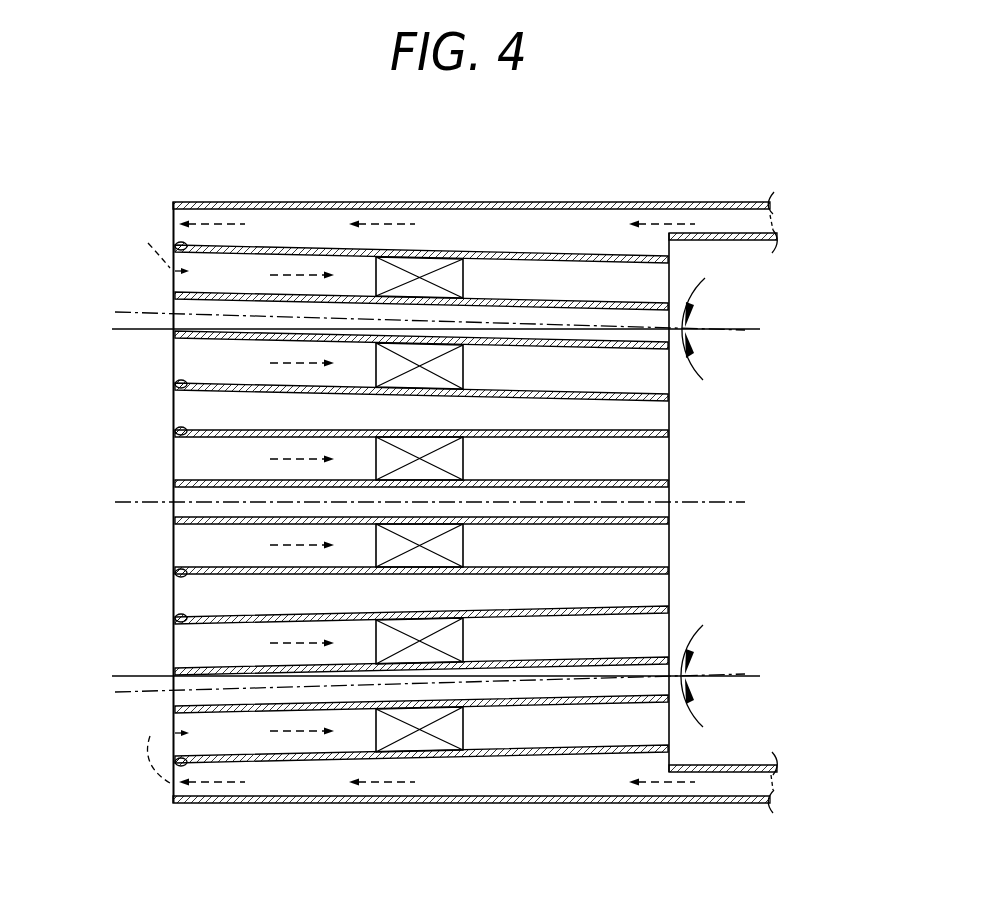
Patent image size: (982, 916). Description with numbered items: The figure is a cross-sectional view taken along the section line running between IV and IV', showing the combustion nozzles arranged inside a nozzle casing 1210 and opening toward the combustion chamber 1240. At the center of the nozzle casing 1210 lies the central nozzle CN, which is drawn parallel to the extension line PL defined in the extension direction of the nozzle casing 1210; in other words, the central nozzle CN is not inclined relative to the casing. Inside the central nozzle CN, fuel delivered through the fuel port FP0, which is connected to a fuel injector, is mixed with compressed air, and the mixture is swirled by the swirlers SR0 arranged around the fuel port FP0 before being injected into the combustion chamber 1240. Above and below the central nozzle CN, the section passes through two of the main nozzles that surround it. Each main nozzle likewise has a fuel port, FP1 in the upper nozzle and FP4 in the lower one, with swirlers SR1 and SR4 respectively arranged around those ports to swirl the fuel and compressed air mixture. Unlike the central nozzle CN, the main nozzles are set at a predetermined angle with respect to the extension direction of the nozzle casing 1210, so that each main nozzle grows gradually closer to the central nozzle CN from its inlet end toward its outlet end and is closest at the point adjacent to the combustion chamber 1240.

The nozzle casing 1210 is at (537, 202).
The combustion chamber 1240 is at (710, 470).
The fuel port FP1 is at (247, 294).
The fuel port FP0 is at (231, 525).
The fuel port FP4 is at (250, 712).
The swirlers SR1 is at (433, 259).
The swirlers SR0 is at (452, 545).
The swirlers SR4 is at (433, 750).
The central nozzle CN is at (173, 466).
The extension line PL is at (172, 502).
The section line IV is at (177, 181).
The section line IV' is at (182, 820).